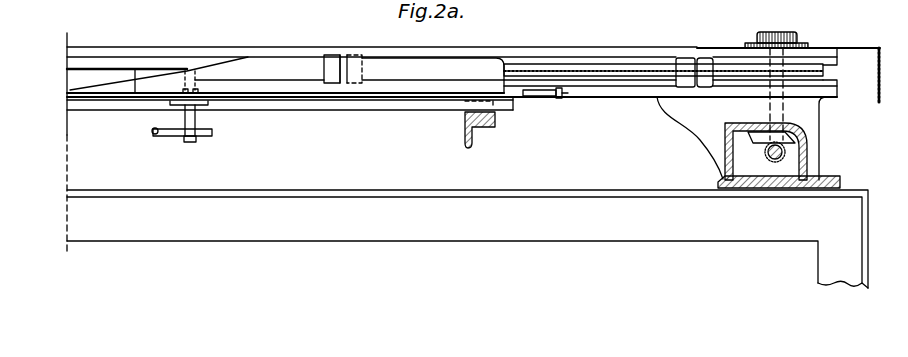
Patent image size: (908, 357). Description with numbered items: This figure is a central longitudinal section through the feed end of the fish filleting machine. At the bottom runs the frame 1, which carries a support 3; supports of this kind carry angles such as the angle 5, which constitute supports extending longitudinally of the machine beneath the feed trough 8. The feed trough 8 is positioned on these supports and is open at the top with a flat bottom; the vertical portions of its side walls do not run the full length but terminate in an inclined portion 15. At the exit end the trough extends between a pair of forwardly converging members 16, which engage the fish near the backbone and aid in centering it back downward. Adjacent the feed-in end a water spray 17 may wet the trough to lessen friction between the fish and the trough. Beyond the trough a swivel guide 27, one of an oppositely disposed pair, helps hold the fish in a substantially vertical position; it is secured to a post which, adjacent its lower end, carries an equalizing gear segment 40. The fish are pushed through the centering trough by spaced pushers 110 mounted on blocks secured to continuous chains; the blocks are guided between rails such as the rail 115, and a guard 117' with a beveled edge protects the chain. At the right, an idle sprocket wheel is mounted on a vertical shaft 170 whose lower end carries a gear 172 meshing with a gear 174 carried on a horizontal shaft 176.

The frame 1 is at (563, 238).
The support 3 is at (464, 140).
The angle 5 is at (365, 105).
The feed trough 8 is at (483, 65).
The inclined portion 15 is at (205, 72).
The forwardly converging member 16 is at (80, 90).
The water spray 17 is at (553, 97).
The swivel guide 27 is at (135, 68).
The equalizing gear segment 40 is at (204, 136).
The pusher 110 is at (332, 57).
The rail 115 is at (557, 62).
The guard 117' is at (860, 63).
The vertical shaft 170 is at (783, 117).
The gear 172 is at (778, 134).
The gear 174 is at (786, 152).
The horizontal shaft 176 is at (768, 158).